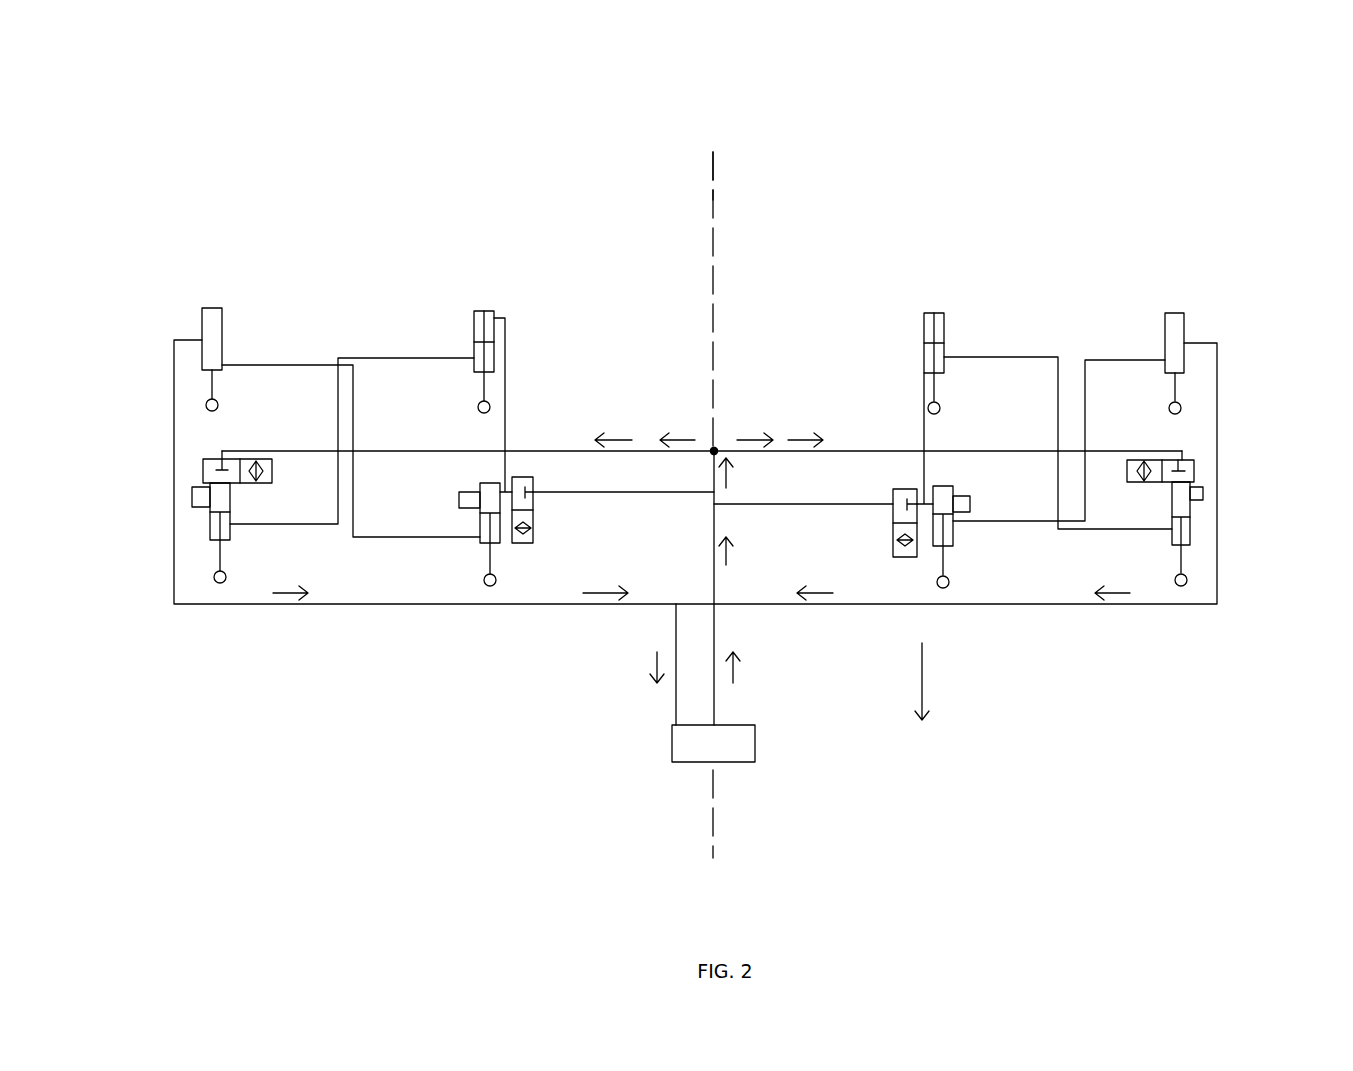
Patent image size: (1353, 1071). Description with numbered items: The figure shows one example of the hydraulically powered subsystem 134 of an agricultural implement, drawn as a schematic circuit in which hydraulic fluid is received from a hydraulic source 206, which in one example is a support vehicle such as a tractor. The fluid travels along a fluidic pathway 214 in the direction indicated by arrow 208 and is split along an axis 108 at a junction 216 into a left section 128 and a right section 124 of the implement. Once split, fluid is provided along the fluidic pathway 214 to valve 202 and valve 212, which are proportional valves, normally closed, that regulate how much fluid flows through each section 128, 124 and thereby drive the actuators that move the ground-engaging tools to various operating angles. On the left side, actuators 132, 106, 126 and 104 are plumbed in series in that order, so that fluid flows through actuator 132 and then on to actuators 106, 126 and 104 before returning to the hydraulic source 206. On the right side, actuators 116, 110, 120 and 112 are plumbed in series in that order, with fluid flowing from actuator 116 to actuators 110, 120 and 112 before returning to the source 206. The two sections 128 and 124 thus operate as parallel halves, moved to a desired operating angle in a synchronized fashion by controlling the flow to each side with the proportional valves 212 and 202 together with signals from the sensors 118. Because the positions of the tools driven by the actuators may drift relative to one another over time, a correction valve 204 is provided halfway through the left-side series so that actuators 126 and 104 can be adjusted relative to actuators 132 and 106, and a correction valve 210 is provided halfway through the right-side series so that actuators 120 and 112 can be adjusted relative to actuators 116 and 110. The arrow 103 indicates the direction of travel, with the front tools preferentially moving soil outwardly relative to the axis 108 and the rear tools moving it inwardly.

The hydraulic subsystem 134 is at (250, 152).
The actuator 104 is at (205, 308).
The actuator 106 is at (473, 328).
The axis 108 is at (714, 192).
The actuator 110 is at (928, 312).
The actuator 112 is at (1184, 325).
The fluidic pathway 214 is at (543, 451).
The junction 216 is at (714, 451).
The valve 202 is at (245, 483).
The actuator 132 is at (210, 512).
The actuator 126 is at (480, 543).
The correction valve 204 is at (545, 525).
The hydraulic source 206 is at (713, 743).
The arrow 208 is at (733, 670).
The correction valve 210 is at (893, 532).
The actuator 120 is at (953, 523).
The valve 212 is at (1197, 467).
The actuator 116 is at (1190, 505).
The sensor 118 is at (192, 497).
The arrow 103 is at (922, 677).
The left section 128 is at (307, 751).
The right section 124 is at (1073, 800).